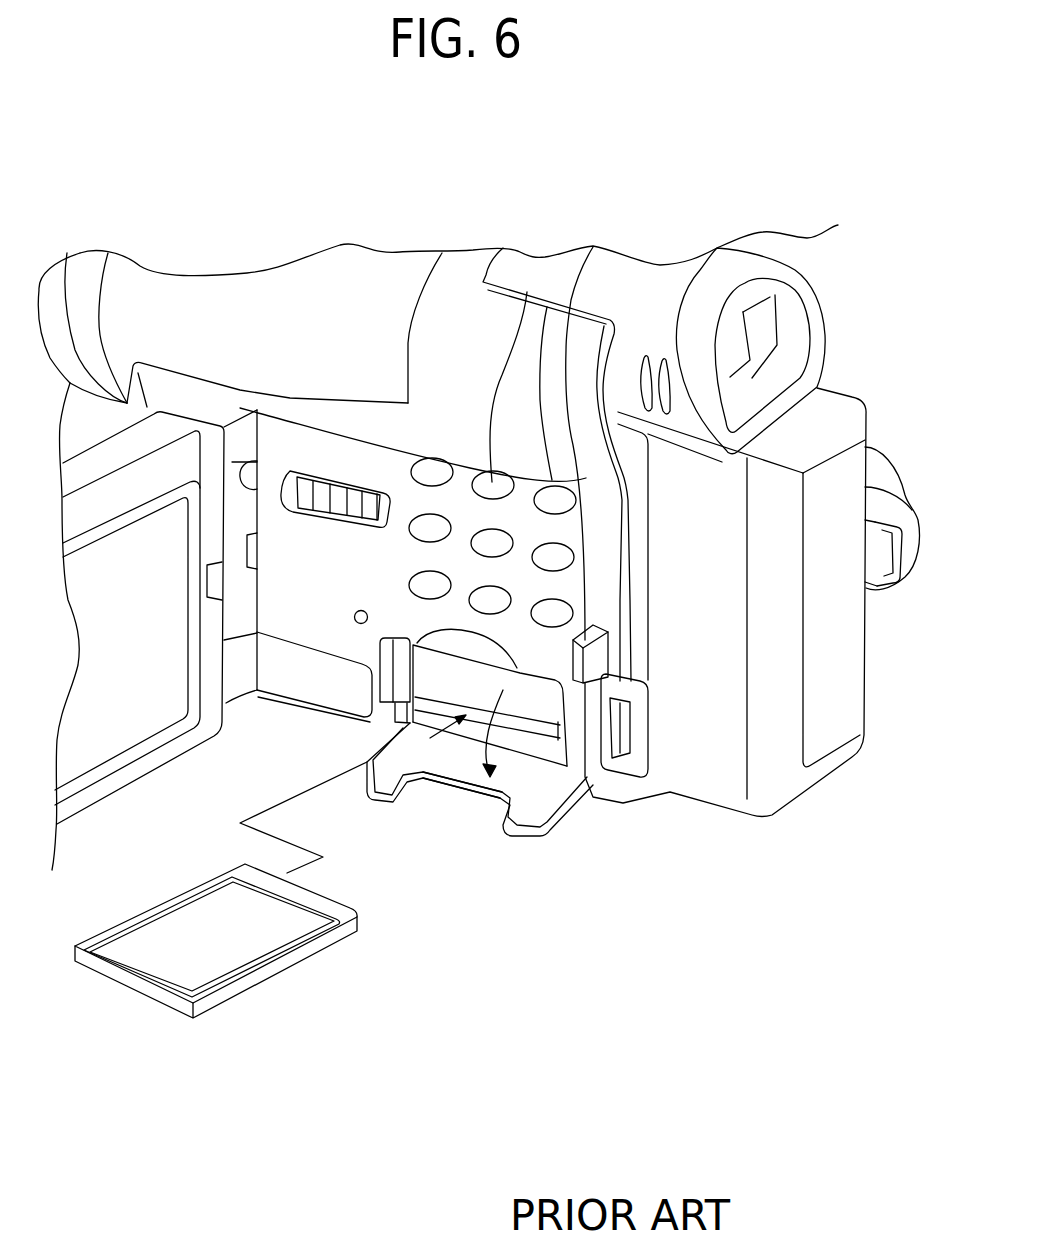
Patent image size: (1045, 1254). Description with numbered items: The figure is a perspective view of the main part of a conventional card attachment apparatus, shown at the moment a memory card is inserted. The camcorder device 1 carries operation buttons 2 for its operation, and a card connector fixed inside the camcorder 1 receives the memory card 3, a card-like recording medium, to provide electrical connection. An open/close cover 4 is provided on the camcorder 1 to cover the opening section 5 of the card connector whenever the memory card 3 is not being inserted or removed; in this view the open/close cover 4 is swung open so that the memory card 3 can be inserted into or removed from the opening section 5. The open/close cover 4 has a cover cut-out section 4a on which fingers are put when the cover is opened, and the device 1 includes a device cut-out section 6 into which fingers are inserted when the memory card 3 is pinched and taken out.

The camcorder device 1 is at (456, 297).
The operation buttons 2 is at (527, 292).
The memory card 3 is at (230, 950).
The open/close cover 4 is at (516, 812).
The cover cut-out section 4a is at (457, 787).
The opening section 5 is at (527, 730).
The device cut-out section 6 is at (482, 638).